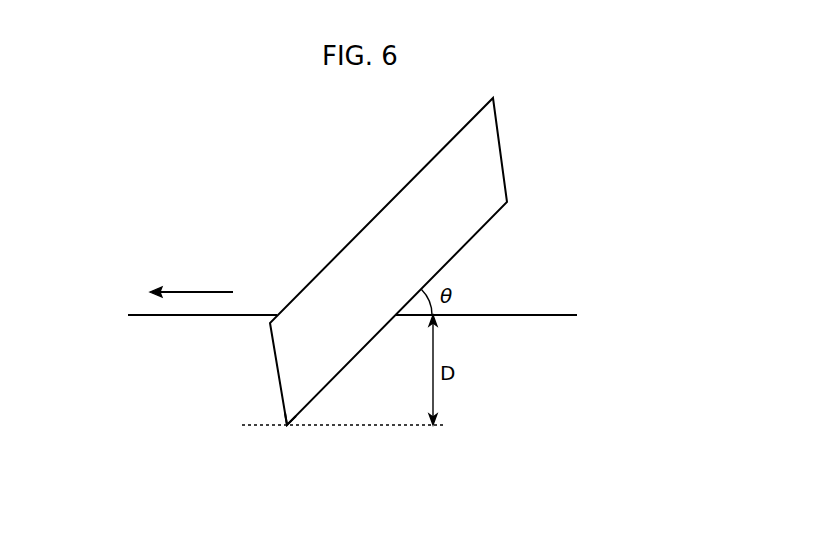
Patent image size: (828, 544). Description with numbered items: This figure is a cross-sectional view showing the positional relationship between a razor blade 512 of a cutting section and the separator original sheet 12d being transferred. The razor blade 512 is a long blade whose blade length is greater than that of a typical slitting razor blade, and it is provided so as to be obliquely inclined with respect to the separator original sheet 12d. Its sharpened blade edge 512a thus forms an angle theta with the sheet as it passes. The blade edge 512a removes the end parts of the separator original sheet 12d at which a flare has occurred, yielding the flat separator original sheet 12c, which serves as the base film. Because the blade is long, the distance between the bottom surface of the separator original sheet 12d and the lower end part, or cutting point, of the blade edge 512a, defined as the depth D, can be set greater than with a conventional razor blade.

The razor blade 512 is at (502, 157).
The blade edge 512a is at (313, 400).
The separator original sheet (base film) 12c is at (146, 314).
The separator original sheet 12d is at (552, 315).